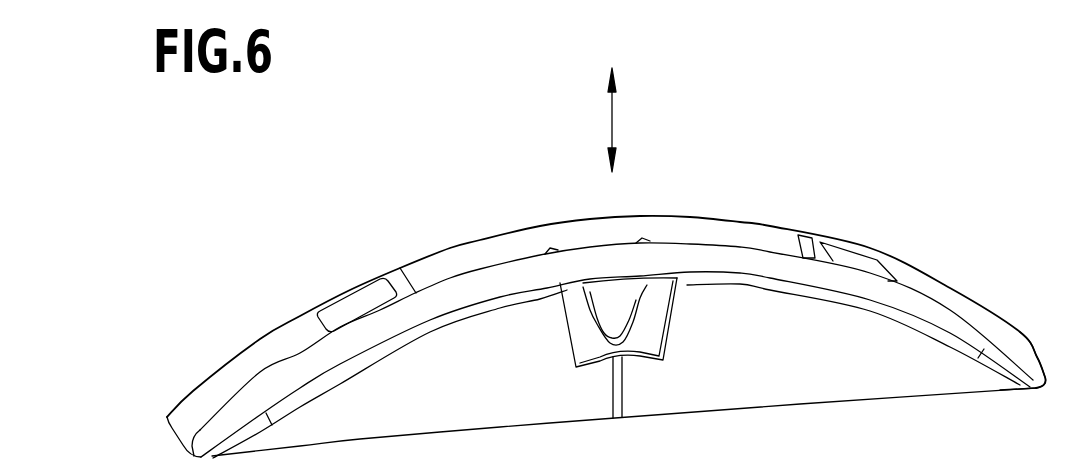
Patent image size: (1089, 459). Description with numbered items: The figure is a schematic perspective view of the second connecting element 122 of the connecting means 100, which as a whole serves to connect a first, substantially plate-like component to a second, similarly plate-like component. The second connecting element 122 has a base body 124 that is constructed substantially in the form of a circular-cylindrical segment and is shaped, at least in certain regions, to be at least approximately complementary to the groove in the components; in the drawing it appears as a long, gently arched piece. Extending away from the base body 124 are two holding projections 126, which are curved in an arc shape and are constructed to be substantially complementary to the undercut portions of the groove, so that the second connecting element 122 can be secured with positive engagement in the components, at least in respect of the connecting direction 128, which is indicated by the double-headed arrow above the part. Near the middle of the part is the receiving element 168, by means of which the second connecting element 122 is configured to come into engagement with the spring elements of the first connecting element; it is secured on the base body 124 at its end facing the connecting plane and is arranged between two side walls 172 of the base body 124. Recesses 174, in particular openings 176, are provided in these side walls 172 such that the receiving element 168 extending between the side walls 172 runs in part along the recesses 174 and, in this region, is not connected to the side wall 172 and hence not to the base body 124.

The connecting means 100 is at (855, 127).
The second connecting element 122 is at (352, 405).
The base body 124 is at (485, 340).
The holding projections 126 is at (927, 329).
The connecting direction 128 is at (608, 117).
The receiving element 168 is at (558, 325).
The side walls 172 is at (825, 343).
The recesses 174 is at (658, 313).
The openings 176 is at (653, 290).